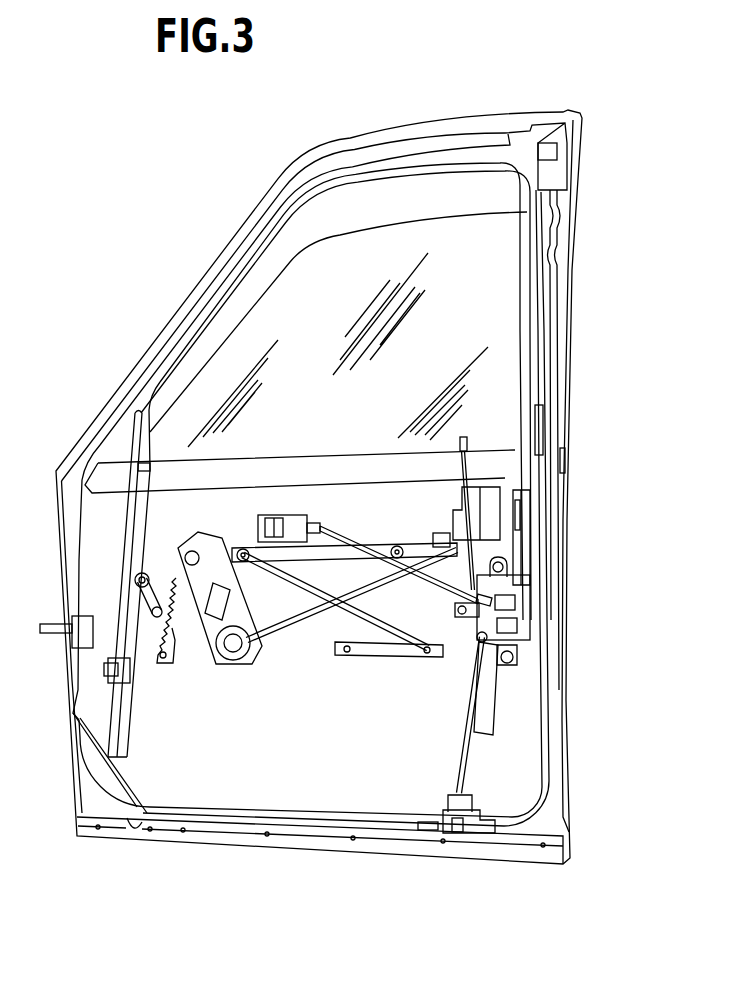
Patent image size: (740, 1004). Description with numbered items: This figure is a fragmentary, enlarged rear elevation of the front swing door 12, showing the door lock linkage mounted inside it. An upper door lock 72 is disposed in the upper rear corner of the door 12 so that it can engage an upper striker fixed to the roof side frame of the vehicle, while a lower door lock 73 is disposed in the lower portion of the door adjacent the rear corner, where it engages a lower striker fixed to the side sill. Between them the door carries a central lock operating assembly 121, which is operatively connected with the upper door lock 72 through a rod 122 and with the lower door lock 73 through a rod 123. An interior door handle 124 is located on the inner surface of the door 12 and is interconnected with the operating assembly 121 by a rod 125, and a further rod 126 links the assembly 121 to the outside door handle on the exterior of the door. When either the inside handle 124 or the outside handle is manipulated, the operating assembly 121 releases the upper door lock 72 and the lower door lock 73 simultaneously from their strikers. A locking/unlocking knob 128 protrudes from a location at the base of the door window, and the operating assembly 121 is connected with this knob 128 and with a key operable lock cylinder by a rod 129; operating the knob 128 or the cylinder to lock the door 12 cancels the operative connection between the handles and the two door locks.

The front swing door 12 is at (159, 334).
The upper door lock 72 is at (562, 118).
The lower door lock 73 is at (470, 833).
The central lock operating assembly 121 is at (519, 620).
The rod 122 is at (543, 390).
The rod 123 is at (470, 727).
The interior door handle 124 is at (287, 515).
The rod 125 is at (327, 527).
The rod 126 is at (523, 550).
The locking/unlocking knob 128 is at (467, 440).
The rod 129 is at (473, 590).